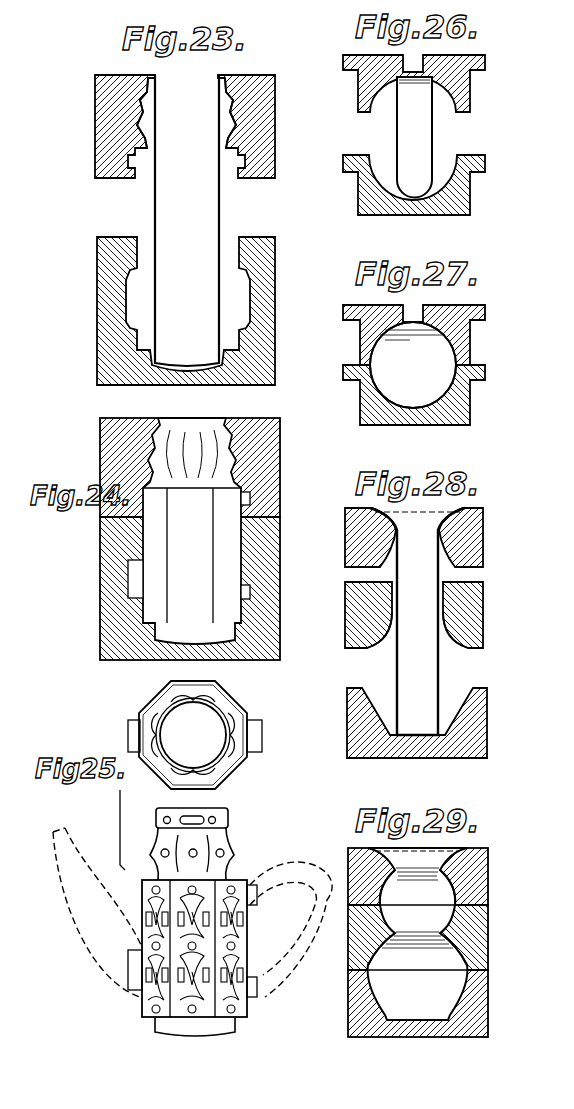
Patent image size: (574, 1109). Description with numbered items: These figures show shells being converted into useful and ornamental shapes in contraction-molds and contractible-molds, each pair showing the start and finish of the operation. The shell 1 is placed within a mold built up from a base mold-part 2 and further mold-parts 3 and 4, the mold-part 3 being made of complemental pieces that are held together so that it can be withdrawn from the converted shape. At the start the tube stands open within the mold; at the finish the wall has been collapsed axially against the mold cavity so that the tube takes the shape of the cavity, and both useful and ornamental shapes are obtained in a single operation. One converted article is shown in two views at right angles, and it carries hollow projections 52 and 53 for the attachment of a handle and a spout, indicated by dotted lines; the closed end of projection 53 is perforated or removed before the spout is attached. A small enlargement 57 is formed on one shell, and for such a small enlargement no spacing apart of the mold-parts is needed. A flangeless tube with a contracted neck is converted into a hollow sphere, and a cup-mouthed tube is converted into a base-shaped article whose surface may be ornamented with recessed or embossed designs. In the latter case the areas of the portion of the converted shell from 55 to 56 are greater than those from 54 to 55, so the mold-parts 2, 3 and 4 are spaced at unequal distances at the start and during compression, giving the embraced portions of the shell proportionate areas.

In FIG. 23, the shell 1 is at (157, 214).
In FIG. 28, the mold-part 2 is at (480, 720).
In FIG. 29, the mold-part 2 is at (478, 1010).
In FIG. 23, the mold-part 3 is at (263, 265).
In FIG. 24, the mold-part 3 is at (268, 560).
In FIG. 28, the mold-part 3 is at (485, 646).
In FIG. 29, the mold-part 3 is at (475, 918).
In FIG. 23, the mold-part 4 is at (262, 118).
In FIG. 24, the mold-part 4 is at (268, 445).
In FIG. 28, the mold-part 4 is at (483, 553).
In FIG. 29, the mold-part 4 is at (478, 853).
In FIG. 24, the hollow projection 52 is at (250, 497).
In FIG. 25, the hollow projection 52 is at (258, 738).
In FIG. 24, the hollow projection 53 is at (133, 580).
In FIG. 25, the hollow projection 53 is at (132, 730).
In FIG. 28, the portion of converted shell 54 is at (445, 530).
In FIG. 29, the portion of converted shell 54 is at (440, 870).
In FIG. 28, the portion of converted shell 55 is at (440, 615).
In FIG. 29, the portion of converted shell 55 is at (440, 937).
In FIG. 28, the portion of converted shell 56 is at (430, 745).
In FIG. 29, the portion of converted shell 56 is at (430, 1037).
In FIG. 23, the small enlargement 57 is at (223, 95).